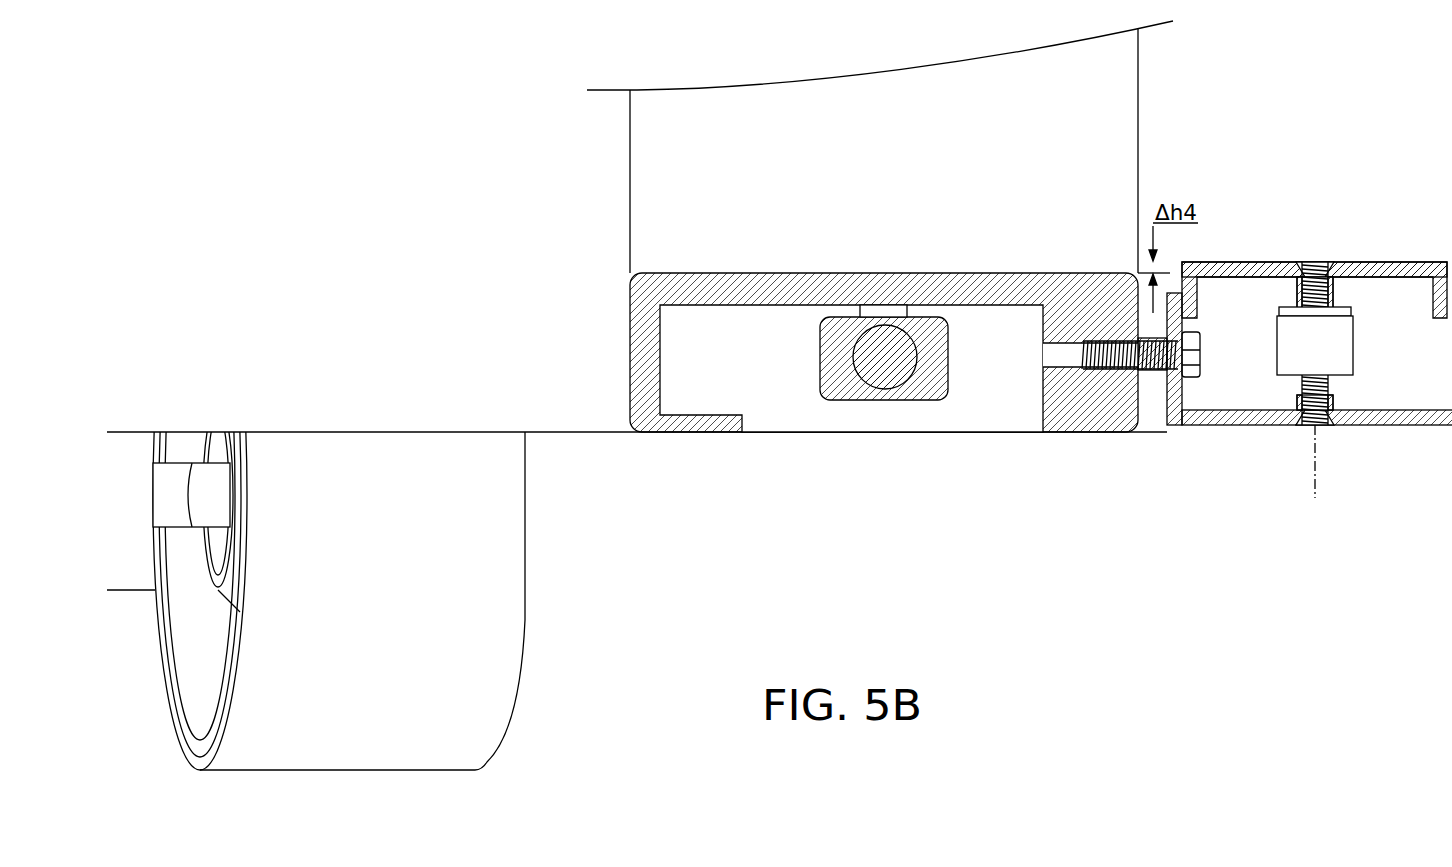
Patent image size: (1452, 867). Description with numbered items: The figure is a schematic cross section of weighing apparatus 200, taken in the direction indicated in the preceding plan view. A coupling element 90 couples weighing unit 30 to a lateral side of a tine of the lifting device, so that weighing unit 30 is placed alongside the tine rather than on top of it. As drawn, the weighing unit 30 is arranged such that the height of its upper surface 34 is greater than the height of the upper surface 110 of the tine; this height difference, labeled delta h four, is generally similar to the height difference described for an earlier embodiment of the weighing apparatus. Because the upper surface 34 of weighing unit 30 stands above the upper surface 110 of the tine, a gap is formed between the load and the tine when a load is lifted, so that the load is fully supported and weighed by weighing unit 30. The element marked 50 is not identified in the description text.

The upper surface of the tine 110 is at (990, 273).
The coupling element 90 is at (1150, 372).
The weighing unit 30 is at (1381, 464).
The upper surface of weighing unit 34 is at (1384, 262).
The weighing apparatus 200 is at (1232, 467).
The adjusting nut 50 is at (1353, 341).